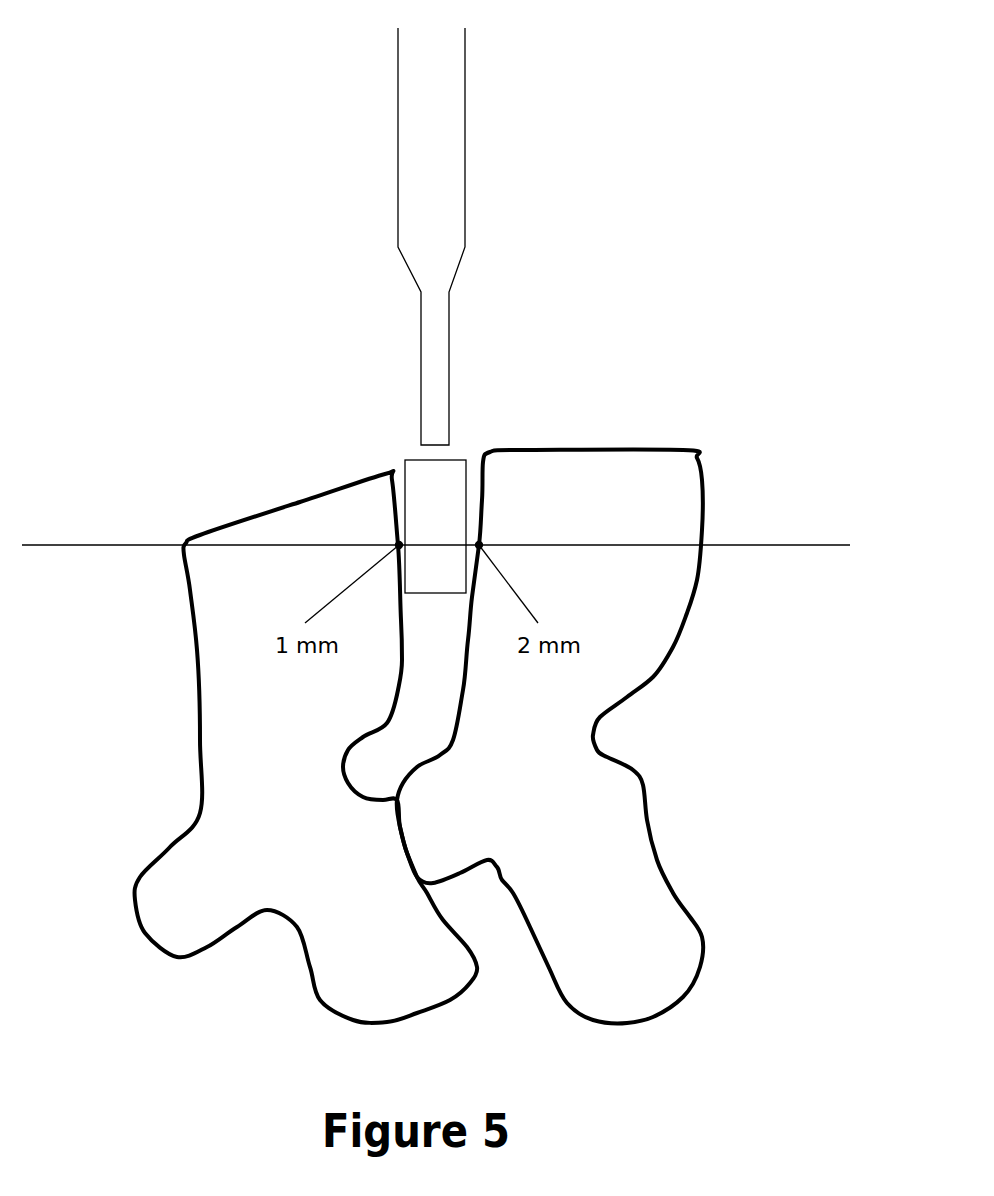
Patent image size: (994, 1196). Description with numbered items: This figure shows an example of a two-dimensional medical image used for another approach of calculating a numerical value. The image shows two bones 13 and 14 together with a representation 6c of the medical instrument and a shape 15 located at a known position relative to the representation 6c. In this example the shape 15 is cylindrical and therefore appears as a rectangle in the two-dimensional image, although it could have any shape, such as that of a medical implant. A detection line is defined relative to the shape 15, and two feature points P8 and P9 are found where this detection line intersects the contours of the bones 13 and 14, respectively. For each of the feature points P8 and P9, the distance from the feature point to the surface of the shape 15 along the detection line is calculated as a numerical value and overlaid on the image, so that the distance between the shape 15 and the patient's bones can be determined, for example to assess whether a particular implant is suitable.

The representation of the medical instrument 6c is at (465, 120).
The bone 13 is at (662, 447).
The bone 14 is at (243, 520).
The shape 15 is at (415, 457).
The feature point P8 is at (479, 545).
The feature point P9 is at (399, 545).